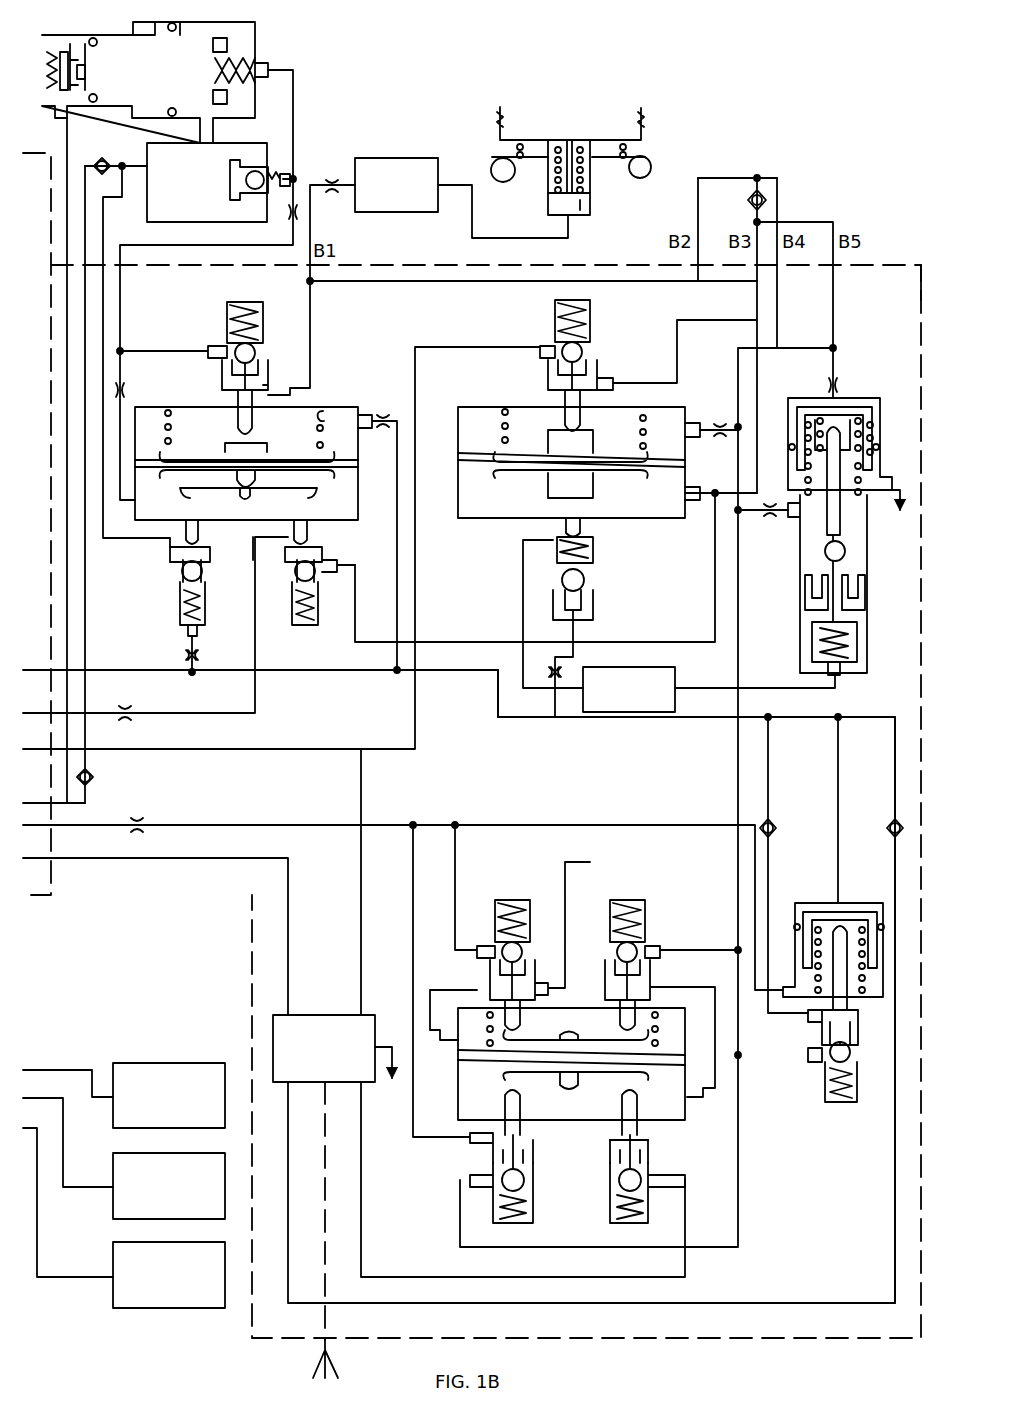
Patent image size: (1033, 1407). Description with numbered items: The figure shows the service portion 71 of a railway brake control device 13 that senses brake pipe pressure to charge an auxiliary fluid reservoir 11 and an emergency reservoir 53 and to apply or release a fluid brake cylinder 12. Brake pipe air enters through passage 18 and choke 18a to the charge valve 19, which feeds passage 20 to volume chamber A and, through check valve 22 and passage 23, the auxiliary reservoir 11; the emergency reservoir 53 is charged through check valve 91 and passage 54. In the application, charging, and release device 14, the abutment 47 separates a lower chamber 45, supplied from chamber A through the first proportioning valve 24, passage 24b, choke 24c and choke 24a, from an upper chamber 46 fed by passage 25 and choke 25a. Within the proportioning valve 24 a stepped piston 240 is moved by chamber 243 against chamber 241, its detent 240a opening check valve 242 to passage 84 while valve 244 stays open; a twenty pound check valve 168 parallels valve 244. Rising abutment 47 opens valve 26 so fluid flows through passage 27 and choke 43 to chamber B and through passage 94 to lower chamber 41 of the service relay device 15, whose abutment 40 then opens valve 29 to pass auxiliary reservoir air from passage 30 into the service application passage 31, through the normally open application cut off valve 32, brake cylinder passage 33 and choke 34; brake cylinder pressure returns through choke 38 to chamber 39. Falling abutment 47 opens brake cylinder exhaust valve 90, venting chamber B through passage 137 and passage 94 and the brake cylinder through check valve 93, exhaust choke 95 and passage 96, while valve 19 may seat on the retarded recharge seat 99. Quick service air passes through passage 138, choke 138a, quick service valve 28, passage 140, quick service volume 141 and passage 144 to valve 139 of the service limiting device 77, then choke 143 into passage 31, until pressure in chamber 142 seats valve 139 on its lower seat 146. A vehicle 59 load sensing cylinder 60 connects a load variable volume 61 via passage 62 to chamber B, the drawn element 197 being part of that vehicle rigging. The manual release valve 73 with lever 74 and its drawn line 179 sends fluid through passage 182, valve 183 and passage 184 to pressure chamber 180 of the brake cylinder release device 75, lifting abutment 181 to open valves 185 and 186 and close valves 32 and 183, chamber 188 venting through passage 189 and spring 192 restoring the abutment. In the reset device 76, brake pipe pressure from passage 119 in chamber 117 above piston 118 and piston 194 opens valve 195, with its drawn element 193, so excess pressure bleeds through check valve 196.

The auxiliary fluid reservoir 11 is at (198, 1063).
The fluid brake cylinder 12 is at (190, 1242).
The brake control device 13 is at (643, 258).
The application, charging, and release device 14 is at (238, 411).
The service relay device 15 is at (579, 418).
The passage 18 is at (112, 670).
The choke 18a is at (200, 653).
The charge valve 19 is at (182, 571).
The passage 20 is at (103, 226).
The check valve 22 is at (97, 160).
The passage 23 is at (85, 578).
The first proportioning valve 24 is at (178, 71).
The choke 24a is at (128, 384).
The passage 24b is at (293, 105).
The choke 24c is at (286, 216).
The passage 25 is at (385, 545).
The choke 25a is at (383, 412).
The valve 26 is at (255, 350).
The passage 27 is at (312, 224).
The quick service valve 28 is at (585, 580).
The valve 29 is at (582, 350).
The passage 30 is at (278, 749).
The service application passage 31 is at (677, 350).
The application cut off valve 32 is at (524, 1176).
The brake cylinder passage 33 is at (375, 825).
The choke 34 is at (140, 820).
The choke 38 is at (718, 420).
The chamber 39 is at (574, 428).
The abutment 40 is at (640, 470).
The lower chamber 41 is at (633, 480).
The choke 43 is at (332, 178).
The lower chamber 45 is at (231, 493).
The upper chamber 46 is at (244, 427).
The abutment 47 is at (282, 452).
The emergency reservoir 53 is at (190, 1153).
The passage 54 is at (180, 858).
The vehicle 59 is at (645, 112).
The load sensing cylinder 60 is at (590, 205).
The load variable volume 61 is at (580, 212).
The passage 62 is at (538, 236).
The service portion 71 is at (880, 262).
The manual release valve 73 is at (333, 1010).
The manual control lever 74 is at (340, 1362).
The brake cylinder release device 75 is at (574, 1022).
The reset device 76 is at (835, 976).
The service limiting device 77 is at (839, 510).
The passage 84 is at (67, 128).
The brake cylinder exhaust valve 90 is at (316, 570).
The check valve 91 is at (92, 780).
The check valve 93 is at (764, 196).
The passage 94 is at (715, 586).
The exhaust choke 95 is at (126, 718).
The passage 96 is at (105, 712).
The retarded recharge seat 99 is at (183, 592).
The chamber 117 is at (848, 903).
The piston 118 is at (808, 905).
The passage 119 is at (838, 760).
The passage 137 is at (665, 281).
The passage 138 is at (555, 700).
The choke 138a is at (562, 668).
The valve 139 is at (824, 556).
The passage 140 is at (523, 590).
The quick service volume 141 is at (667, 667).
The chamber 142 is at (803, 398).
The choke 143 is at (770, 520).
The passage 144 is at (700, 686).
The lower seat 146 is at (865, 590).
The check valve 168 is at (245, 176).
The passage 179 is at (361, 941).
The pressure chamber 180 is at (500, 1124).
The abutment 181 is at (649, 1124).
The passage 182 is at (412, 1277).
The valve 183 is at (618, 1184).
The passage 184 is at (615, 1128).
The valve 185 is at (520, 950).
The valve 186 is at (638, 946).
The chamber 188 is at (571, 1044).
The passage 189 is at (435, 990).
The spring 192 is at (665, 1012).
The valve 193 is at (816, 1052).
The piston 194 is at (862, 912).
The valve 195 is at (828, 1066).
The check valve 196 is at (775, 822).
The brake beam 197 is at (590, 190).
The stepped piston 240 is at (100, 55).
The detent 240a is at (86, 73).
The chamber 241 is at (75, 50).
The check valve 242 is at (62, 50).
The chamber 243 is at (215, 22).
The valve 244 is at (250, 50).